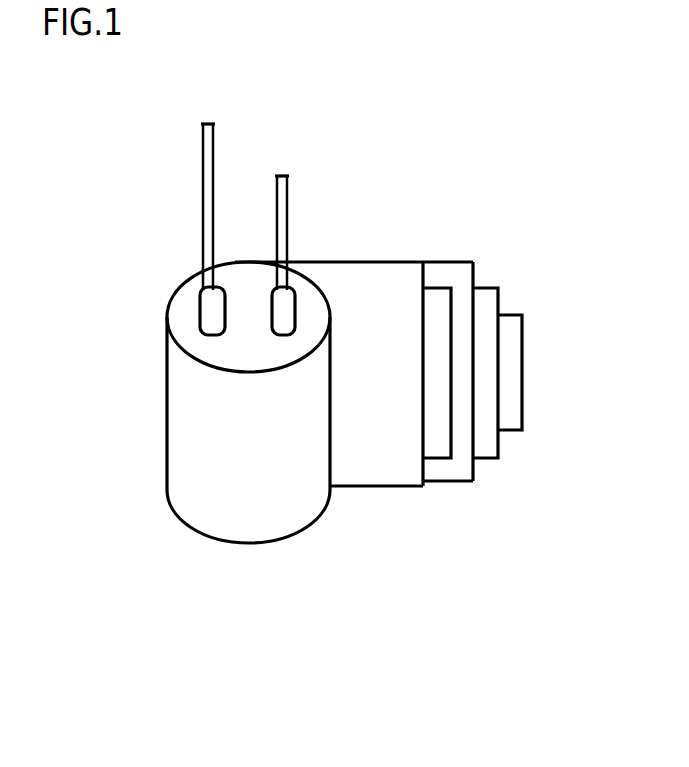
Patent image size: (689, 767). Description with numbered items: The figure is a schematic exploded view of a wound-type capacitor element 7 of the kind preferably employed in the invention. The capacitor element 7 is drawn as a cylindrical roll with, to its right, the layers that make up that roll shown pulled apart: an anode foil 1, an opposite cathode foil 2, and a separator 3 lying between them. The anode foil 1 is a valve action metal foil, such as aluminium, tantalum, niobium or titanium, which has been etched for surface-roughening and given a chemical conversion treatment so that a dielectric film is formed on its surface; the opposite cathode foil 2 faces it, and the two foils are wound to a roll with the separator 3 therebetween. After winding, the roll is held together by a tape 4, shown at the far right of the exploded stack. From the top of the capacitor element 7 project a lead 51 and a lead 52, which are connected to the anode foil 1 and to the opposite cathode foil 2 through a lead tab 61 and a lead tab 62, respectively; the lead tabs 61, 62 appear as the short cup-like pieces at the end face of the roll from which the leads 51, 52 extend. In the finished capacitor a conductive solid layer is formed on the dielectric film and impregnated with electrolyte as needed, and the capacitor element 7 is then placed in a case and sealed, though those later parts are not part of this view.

The anode foil 1 is at (436, 303).
The opposite cathode foil 2 is at (484, 315).
The separator 3 is at (383, 467).
The tape 4 is at (507, 410).
The capacitor element 7 is at (182, 436).
The lead 51 is at (203, 162).
The lead 52 is at (286, 187).
The lead tab 61 is at (212, 320).
The lead tab 62 is at (287, 303).